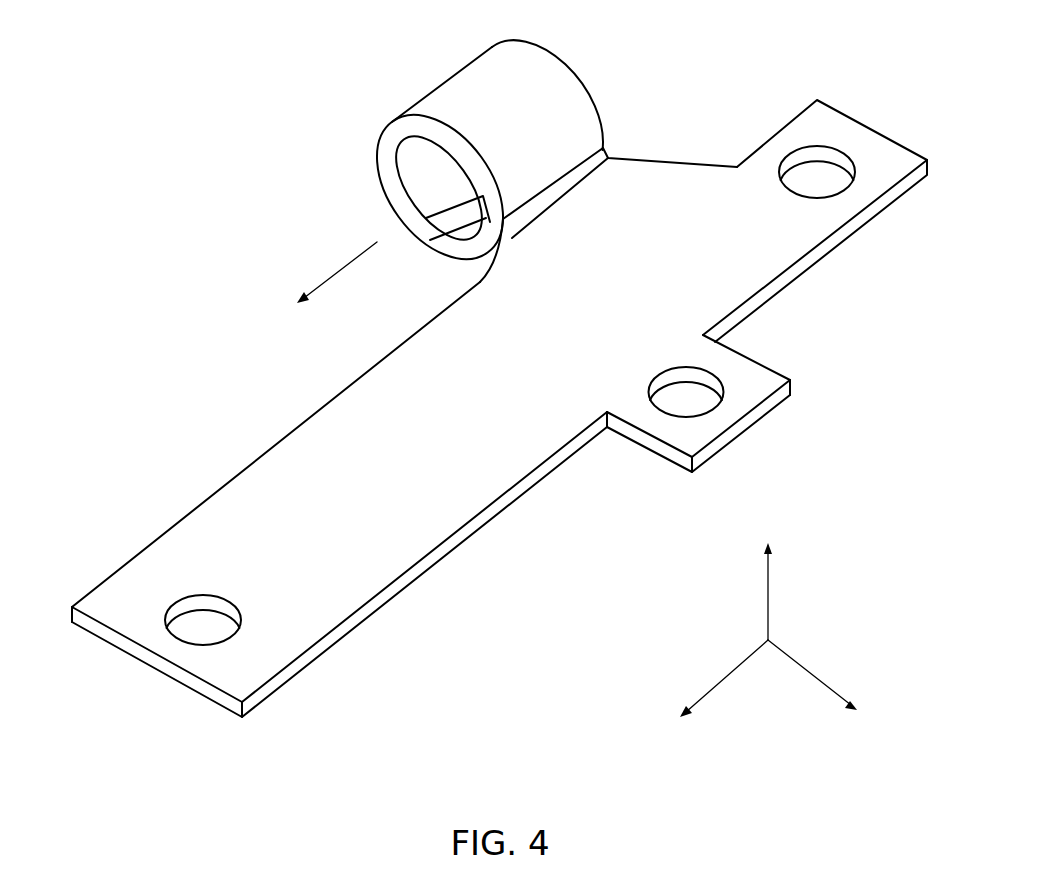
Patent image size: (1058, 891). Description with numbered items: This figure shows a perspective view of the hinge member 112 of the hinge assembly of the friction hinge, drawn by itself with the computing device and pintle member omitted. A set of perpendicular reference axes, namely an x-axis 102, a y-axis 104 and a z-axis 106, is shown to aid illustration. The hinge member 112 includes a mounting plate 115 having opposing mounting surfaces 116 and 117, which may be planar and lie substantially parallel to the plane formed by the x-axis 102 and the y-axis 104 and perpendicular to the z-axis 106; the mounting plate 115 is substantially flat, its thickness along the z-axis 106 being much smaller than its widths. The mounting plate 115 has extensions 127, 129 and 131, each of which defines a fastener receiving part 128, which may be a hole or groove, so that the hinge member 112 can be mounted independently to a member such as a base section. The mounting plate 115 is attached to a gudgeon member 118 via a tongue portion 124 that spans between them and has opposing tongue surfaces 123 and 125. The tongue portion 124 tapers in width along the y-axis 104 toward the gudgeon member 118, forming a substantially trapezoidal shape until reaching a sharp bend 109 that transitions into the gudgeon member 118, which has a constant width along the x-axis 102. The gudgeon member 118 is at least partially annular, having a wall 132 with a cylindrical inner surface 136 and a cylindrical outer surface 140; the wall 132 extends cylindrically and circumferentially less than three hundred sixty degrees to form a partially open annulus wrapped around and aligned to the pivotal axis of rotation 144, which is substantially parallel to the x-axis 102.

The x-axis 102 is at (722, 678).
The y-axis 104 is at (818, 673).
The z-axis 106 is at (772, 577).
The sharp bend 109 is at (504, 234).
The hinge member 112 is at (233, 357).
The mounting plate 115 is at (492, 393).
The mounting surface 116 is at (555, 357).
The mounting surface 117 is at (528, 487).
The gudgeon member 118 is at (455, 80).
The tongue surface 123 is at (555, 215).
The tongue portion 124 is at (600, 180).
The tongue surface 125 is at (622, 152).
The extension 127 is at (108, 598).
The fastener receiving part 128 is at (215, 602).
The extension 129 is at (760, 383).
The extension 131 is at (840, 137).
The wall 132 is at (427, 108).
The cylindrical inner surface 136 is at (412, 181).
The cylindrical outer surface 140 is at (483, 108).
The pivotal axis of rotation 144 is at (337, 267).